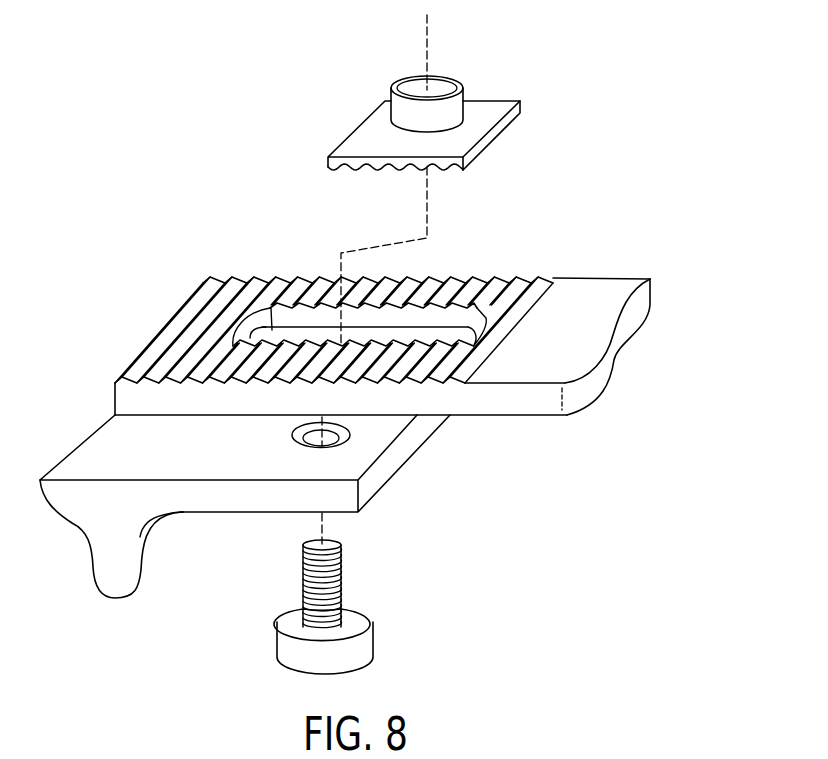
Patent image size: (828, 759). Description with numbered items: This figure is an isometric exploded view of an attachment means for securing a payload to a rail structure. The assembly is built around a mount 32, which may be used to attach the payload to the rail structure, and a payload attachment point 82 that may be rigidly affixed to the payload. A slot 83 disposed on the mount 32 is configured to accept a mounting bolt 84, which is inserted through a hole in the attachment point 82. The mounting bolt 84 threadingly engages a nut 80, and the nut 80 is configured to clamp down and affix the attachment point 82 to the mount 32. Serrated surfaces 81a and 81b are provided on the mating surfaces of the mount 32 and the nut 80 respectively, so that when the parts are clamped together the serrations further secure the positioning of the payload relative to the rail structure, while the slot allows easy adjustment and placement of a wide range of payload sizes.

The nut 80 is at (490, 98).
The serrated surface 81b is at (507, 132).
The serrated surface 81a is at (497, 278).
The slot 83 is at (270, 333).
The mount 32 is at (612, 285).
The payload attachment point 82 is at (98, 582).
The mounting bolt 84 is at (373, 633).